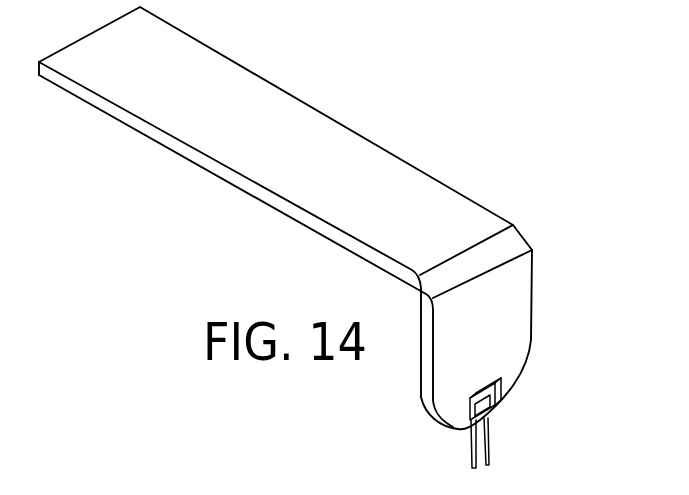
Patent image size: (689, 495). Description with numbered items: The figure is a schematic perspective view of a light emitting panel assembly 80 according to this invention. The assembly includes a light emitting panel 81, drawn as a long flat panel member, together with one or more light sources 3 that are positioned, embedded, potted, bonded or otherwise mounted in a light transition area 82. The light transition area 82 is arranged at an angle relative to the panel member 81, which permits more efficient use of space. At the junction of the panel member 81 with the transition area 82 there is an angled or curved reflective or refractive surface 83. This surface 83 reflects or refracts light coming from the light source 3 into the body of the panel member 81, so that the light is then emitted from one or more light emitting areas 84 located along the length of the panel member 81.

The light emitting panel assembly 80 is at (358, 118).
The light emitting panel 81 is at (268, 97).
The light transition area 82 is at (517, 318).
The reflective or refractive surface 83 is at (513, 243).
The light emitting area 84 is at (236, 231).
The light source 3 is at (483, 398).